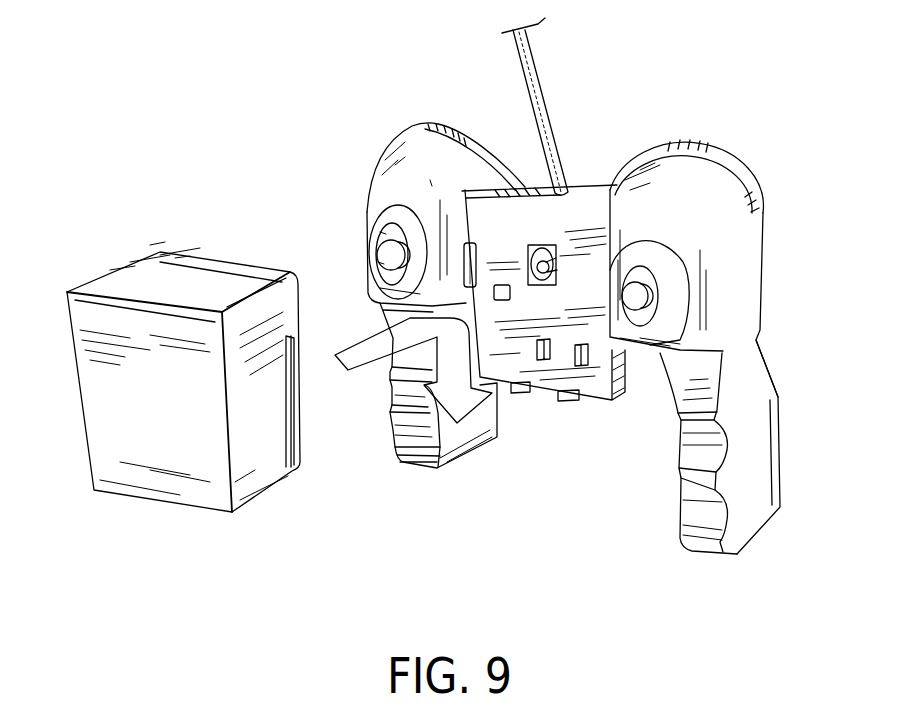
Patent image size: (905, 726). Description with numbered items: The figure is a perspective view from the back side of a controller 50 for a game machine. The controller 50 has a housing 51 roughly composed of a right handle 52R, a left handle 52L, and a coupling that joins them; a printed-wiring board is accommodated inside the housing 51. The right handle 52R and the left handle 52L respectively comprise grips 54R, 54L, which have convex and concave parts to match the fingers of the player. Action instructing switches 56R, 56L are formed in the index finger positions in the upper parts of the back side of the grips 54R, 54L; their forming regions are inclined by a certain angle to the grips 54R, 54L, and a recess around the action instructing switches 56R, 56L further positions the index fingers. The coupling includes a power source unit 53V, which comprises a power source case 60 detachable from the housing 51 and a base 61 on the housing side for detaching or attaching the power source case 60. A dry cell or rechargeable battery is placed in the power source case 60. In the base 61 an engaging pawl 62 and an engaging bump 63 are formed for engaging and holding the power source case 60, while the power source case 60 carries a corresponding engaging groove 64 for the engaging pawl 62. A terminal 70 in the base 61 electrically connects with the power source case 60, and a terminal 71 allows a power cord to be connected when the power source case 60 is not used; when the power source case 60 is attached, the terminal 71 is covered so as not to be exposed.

The controller 50 is at (526, 306).
The housing 51 is at (730, 268).
The right handle 52R is at (456, 423).
The right grip 54R is at (452, 448).
The left handle 52L is at (656, 467).
The left grip 54L is at (697, 462).
The power source unit 53V is at (598, 239).
The base 61 is at (586, 223).
The right action instructing switch 56R is at (392, 253).
The left action instructing switch 56L is at (643, 293).
The power source case 60 is at (218, 347).
The engaging pawl 62 is at (470, 287).
The engaging bump 63 is at (501, 285).
The engaging groove 64 is at (292, 413).
The terminal 70 is at (550, 362).
The terminal for power source cord 71 is at (536, 245).